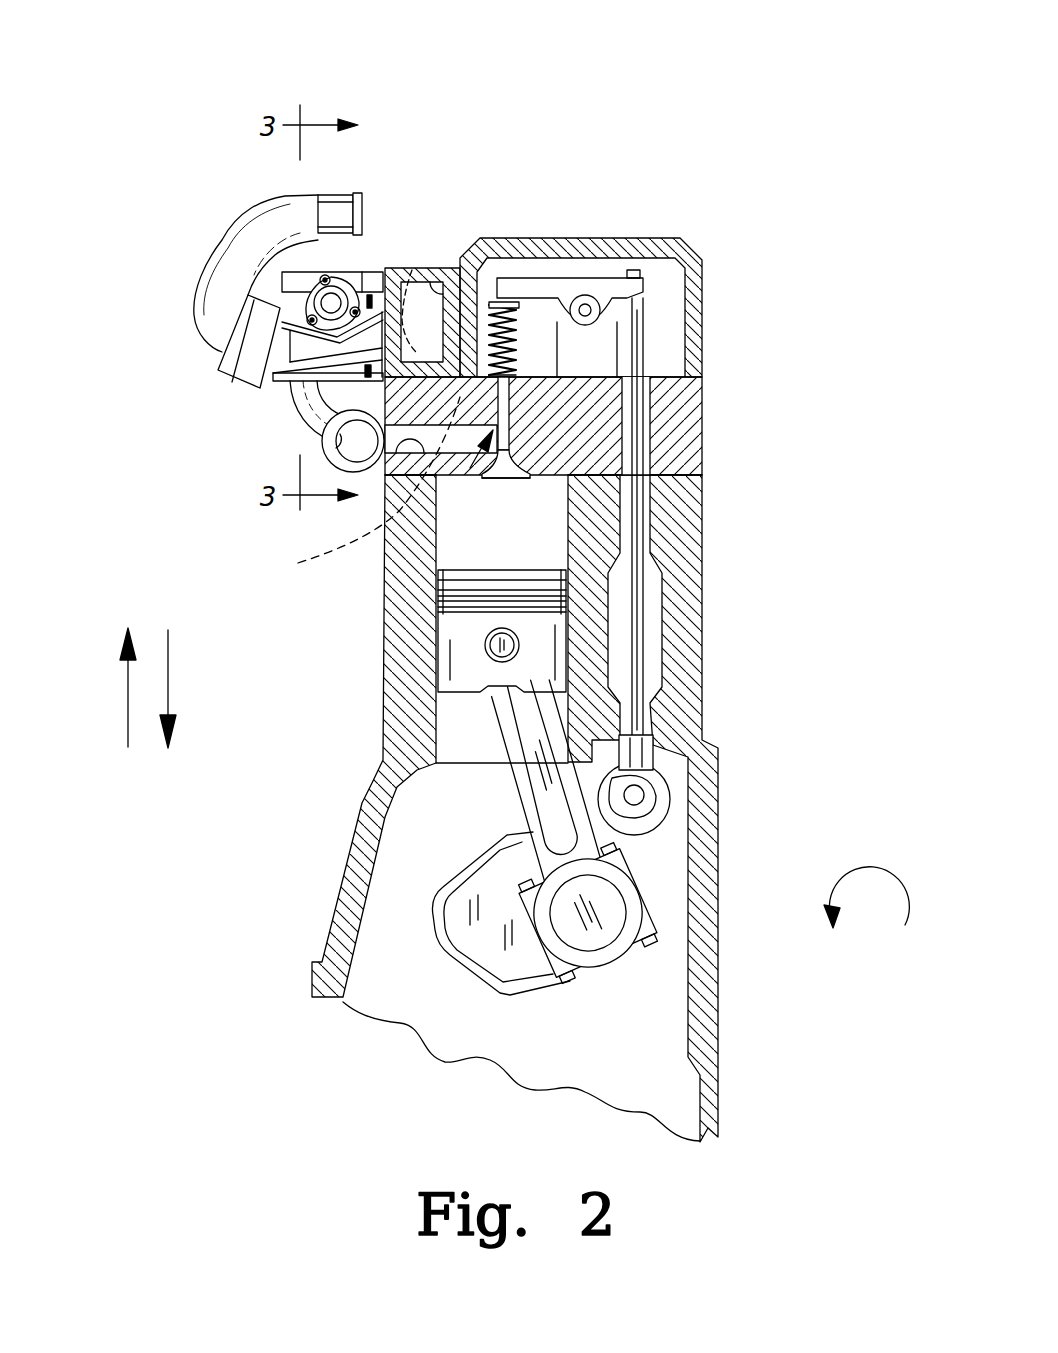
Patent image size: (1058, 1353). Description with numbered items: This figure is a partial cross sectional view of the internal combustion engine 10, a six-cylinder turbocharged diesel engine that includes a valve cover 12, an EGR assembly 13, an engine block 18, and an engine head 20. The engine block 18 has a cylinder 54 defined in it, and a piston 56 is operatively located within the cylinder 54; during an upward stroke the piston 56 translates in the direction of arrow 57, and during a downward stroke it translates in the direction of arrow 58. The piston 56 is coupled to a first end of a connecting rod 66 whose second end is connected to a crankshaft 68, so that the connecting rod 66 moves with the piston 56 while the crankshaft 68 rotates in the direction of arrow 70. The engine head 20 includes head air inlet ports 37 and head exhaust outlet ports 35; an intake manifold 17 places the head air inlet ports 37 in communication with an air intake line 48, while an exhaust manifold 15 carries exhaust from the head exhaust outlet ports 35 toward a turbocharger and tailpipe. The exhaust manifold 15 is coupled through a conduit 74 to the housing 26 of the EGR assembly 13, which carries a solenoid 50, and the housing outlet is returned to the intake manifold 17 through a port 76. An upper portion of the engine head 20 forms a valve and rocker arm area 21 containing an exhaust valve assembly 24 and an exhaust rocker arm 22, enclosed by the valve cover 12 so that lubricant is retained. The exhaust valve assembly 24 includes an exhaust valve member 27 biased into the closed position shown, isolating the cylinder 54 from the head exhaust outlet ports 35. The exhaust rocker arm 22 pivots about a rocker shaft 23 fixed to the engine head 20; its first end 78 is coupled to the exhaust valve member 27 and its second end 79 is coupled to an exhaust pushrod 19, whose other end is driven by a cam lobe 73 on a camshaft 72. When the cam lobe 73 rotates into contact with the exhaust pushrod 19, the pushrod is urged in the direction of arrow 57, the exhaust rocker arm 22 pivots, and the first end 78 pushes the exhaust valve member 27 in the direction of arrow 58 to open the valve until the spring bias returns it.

The internal combustion engine 10 is at (764, 82).
The valve cover 12 is at (637, 244).
The EGR assembly 13 is at (198, 240).
The exhaust manifold 15 is at (324, 442).
The intake manifold 17 is at (455, 265).
The engine block 18 is at (698, 541).
The exhaust pushrod 19 is at (643, 624).
The engine head 20 is at (690, 422).
The valve and rocker arm area 21 is at (678, 344).
The exhaust rocker arm 22 is at (557, 288).
The rocker shaft 23 is at (591, 311).
The exhaust valve assembly 24 is at (491, 450).
The housing 26 is at (367, 278).
The exhaust valve member 27 is at (510, 478).
The head exhaust outlet ports 35 is at (398, 456).
The head air inlet ports 37 is at (361, 489).
The air intake line 48 is at (371, 213).
The solenoid 50 is at (329, 302).
The cylinder 54 is at (480, 456).
The piston 56 is at (437, 658).
The arrow indicating upward stroke direction 57 is at (128, 695).
The arrow indicating downward stroke direction 58 is at (168, 675).
The connecting rod 66 is at (534, 783).
The crankshaft 68 is at (458, 906).
The arrow indicating crankshaft rotation direction 70 is at (866, 869).
The camshaft 72 is at (656, 797).
The cam lobe 73 is at (640, 835).
The conduit 74 is at (292, 385).
The port 76 is at (408, 290).
The first end of exhaust rocker arm 78 is at (527, 268).
The second end of exhaust rocker arm 79 is at (642, 285).